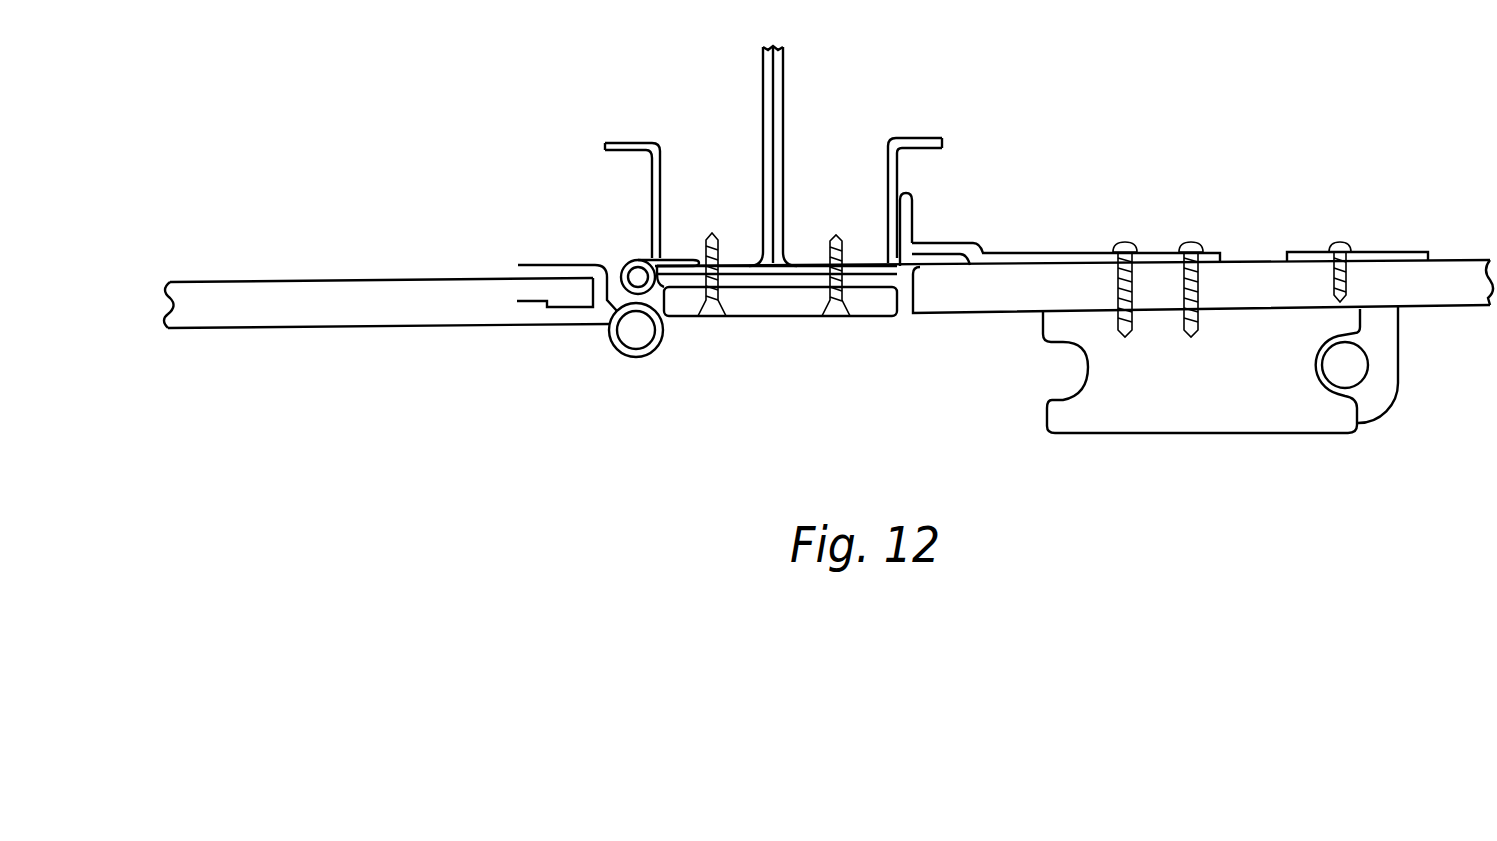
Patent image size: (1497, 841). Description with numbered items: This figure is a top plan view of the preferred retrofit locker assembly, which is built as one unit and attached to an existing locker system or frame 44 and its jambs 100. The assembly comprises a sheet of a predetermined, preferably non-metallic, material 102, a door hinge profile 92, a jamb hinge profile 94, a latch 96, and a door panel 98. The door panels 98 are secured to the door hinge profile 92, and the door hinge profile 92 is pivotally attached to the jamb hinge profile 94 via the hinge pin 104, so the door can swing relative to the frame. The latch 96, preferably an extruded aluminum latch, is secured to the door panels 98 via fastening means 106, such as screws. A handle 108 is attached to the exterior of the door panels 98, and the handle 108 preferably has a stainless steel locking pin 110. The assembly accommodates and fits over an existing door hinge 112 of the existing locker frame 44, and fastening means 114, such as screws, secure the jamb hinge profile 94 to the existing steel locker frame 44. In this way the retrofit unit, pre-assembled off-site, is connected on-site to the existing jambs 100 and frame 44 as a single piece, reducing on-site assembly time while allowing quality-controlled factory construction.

The existing locker frame 44 is at (783, 90).
The door hinge profile 92 is at (568, 323).
The jamb hinge profile 94 is at (800, 277).
The latch 96 is at (1075, 253).
The door panel 98 is at (405, 300).
The jambs 100 is at (625, 145).
The sheet of a predetermined material 102 is at (880, 317).
The hinge pin 104 is at (632, 333).
The fastening means 106 is at (1193, 240).
The handle 108 is at (1203, 433).
The locking pin 110 is at (1400, 400).
The existing door hinge 112 is at (630, 263).
The fastening means 114 is at (708, 320).